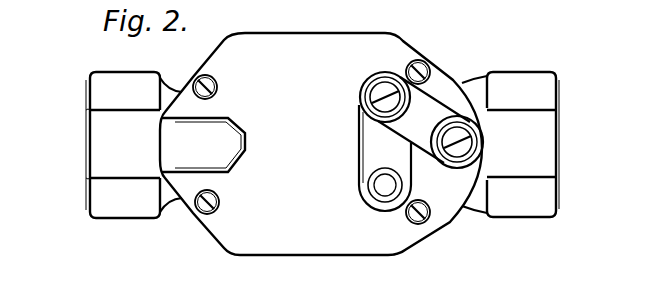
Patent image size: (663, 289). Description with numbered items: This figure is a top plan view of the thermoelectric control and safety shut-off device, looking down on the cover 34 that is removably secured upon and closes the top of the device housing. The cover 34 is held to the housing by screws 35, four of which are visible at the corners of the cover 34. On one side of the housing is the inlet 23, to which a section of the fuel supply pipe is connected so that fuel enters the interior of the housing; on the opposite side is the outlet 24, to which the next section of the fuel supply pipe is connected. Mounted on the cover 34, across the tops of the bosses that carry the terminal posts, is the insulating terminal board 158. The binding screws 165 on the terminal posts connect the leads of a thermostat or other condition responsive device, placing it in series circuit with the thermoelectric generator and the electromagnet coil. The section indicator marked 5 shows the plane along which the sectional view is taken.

The cover 34 is at (307, 46).
The outlet 24 is at (88, 101).
The inlet 23 is at (560, 110).
The screws 35 is at (217, 81).
The insulating terminal board 158 is at (402, 132).
The binding screws 165 is at (374, 93).
The section line 5 is at (95, 143).